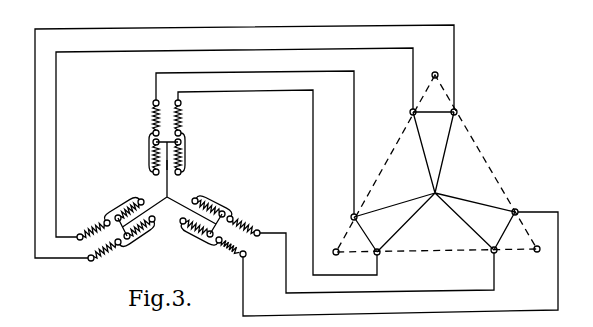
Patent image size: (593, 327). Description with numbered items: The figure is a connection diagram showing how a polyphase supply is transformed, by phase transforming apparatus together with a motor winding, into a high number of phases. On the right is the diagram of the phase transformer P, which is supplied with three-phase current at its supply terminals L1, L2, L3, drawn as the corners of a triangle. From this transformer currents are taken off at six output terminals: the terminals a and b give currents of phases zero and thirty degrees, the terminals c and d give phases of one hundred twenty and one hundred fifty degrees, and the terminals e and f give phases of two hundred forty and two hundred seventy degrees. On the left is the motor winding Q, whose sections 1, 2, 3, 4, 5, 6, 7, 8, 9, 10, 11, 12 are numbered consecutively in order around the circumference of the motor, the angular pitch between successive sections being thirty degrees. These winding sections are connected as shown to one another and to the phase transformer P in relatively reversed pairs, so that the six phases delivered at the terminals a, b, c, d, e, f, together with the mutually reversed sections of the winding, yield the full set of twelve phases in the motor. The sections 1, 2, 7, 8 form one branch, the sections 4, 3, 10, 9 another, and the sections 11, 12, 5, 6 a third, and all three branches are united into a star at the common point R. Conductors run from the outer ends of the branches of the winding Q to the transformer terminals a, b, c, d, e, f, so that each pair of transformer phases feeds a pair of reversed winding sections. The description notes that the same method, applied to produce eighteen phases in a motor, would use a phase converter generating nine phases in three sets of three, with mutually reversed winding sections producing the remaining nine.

The motor winding section 1 is at (149, 118).
The motor winding section 2 is at (184, 118).
The motor winding section 3 is at (137, 236).
The motor winding section 4 is at (124, 204).
The motor winding section 5 is at (243, 220).
The motor winding section 6 is at (231, 254).
The motor winding section 7 is at (146, 154).
The motor winding section 8 is at (186, 154).
The motor winding section 9 is at (104, 256).
The motor winding section 10 is at (91, 229).
The motor winding section 11 is at (212, 201).
The motor winding section 12 is at (197, 236).
The phase transformer P is at (436, 163).
The motor winding Q is at (129, 161).
The star point R is at (170, 189).
The phase transformer terminal a is at (404, 112).
The phase transformer terminal b is at (461, 112).
The phase transformer terminal c is at (517, 204).
The phase transformer terminal d is at (487, 259).
The phase transformer terminal e is at (383, 259).
The phase transformer terminal f is at (347, 211).
The supply terminal L1 is at (434, 67).
The supply terminal L2 is at (534, 261).
The supply terminal L3 is at (328, 260).